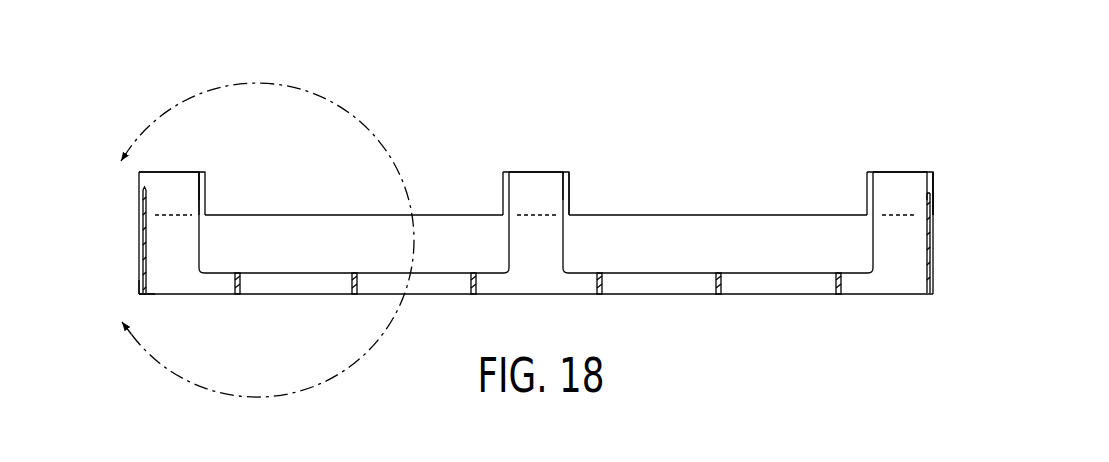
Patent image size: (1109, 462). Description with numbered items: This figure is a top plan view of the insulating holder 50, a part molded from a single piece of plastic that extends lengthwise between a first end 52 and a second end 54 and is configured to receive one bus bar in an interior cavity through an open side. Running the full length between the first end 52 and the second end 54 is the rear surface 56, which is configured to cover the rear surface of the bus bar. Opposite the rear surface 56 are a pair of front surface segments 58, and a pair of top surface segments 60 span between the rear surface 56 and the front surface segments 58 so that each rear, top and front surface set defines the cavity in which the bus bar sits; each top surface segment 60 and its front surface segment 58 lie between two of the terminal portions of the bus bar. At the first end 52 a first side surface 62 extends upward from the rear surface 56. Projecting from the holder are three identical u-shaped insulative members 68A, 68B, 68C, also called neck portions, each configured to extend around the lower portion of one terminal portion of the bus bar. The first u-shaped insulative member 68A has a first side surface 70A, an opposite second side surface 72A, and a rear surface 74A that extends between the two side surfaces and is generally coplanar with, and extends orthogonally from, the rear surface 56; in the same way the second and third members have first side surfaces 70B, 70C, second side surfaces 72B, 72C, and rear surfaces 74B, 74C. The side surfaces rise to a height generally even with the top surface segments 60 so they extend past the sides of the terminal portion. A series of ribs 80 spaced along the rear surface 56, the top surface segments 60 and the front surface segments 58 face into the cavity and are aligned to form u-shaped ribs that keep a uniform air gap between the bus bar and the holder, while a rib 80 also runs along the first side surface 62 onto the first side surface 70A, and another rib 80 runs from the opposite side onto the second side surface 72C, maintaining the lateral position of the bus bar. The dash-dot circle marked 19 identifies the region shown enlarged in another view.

The section view indicator for FIG. 19 is at (250, 240).
The insulating holder 50 is at (778, 106).
The first end 52 is at (130, 250).
The second end 54 is at (939, 256).
The rear surface 56 is at (663, 296).
The front surface segment 58 is at (372, 232).
The top surface segment 60 is at (447, 212).
The first side surface 62 is at (140, 268).
The first u-shaped insulative member 68A is at (175, 168).
The second u-shaped insulative member 68B is at (527, 169).
The third u-shaped insulative member 68C is at (893, 169).
The first side surface 70A is at (140, 192).
The first side surface 70B is at (503, 188).
The first side surface 70C is at (867, 192).
The second side surface 72A is at (200, 198).
The second side surface 72B is at (570, 197).
The second side surface 72C is at (930, 193).
The rear surface 74A is at (188, 190).
The rear surface 74B is at (552, 187).
The rear surface 74C is at (917, 182).
The rib 80 is at (145, 274).